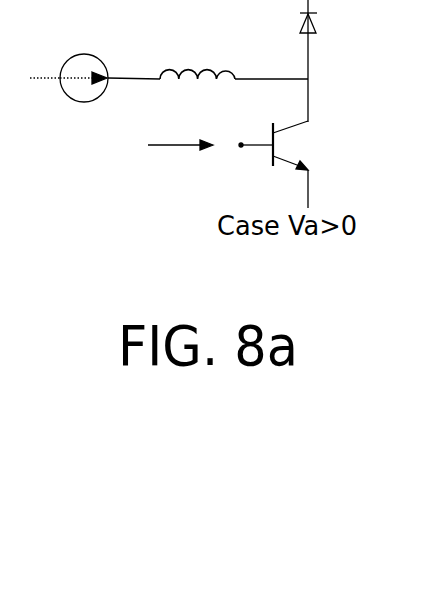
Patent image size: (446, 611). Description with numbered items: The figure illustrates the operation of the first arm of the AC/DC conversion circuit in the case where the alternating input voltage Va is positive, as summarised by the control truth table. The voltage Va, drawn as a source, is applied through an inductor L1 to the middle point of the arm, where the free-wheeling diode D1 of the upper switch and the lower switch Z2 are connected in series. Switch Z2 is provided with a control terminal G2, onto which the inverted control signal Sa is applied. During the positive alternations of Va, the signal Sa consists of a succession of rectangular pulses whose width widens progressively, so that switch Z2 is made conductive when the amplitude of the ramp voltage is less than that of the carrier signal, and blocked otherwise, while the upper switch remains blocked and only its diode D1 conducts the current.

The alternating input voltage Va is at (84, 64).
The inductor L1 is at (197, 56).
The free-wheeling diode D1 is at (328, 61).
The switch Z2 is at (311, 164).
The control terminal G2 is at (248, 163).
The control signal Sa is at (143, 125).